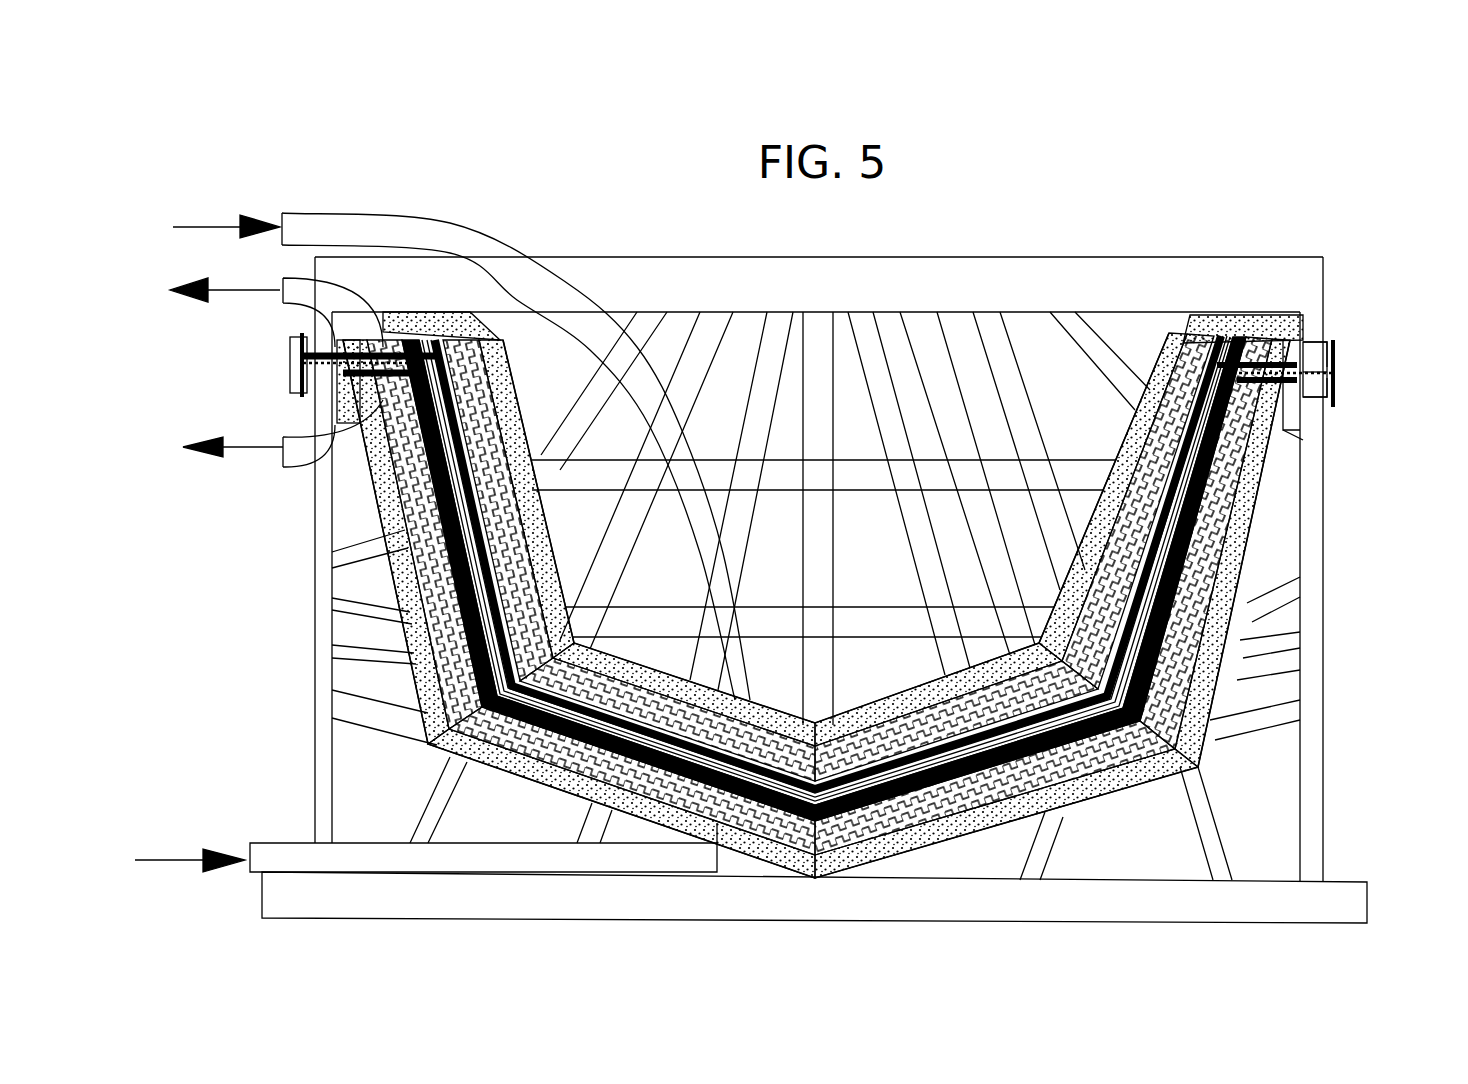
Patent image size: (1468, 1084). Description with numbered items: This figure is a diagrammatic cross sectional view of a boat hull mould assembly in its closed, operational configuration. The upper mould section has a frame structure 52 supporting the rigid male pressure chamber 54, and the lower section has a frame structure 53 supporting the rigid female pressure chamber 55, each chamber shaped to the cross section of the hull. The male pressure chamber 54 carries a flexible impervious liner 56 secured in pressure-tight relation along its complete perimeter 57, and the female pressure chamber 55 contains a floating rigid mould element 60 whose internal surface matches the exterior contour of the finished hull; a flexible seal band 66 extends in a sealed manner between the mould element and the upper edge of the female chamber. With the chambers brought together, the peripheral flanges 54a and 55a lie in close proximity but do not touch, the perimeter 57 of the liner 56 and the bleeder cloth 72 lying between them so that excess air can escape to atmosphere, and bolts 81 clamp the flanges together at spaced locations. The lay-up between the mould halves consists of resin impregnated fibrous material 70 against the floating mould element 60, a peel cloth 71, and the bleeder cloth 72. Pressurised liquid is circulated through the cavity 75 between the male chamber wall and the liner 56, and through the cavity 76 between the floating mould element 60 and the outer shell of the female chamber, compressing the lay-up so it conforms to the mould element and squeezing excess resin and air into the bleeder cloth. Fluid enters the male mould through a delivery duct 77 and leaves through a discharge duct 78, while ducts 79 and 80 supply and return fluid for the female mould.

The frame structure 52 is at (1017, 272).
The frame structure 53 is at (1305, 748).
The male pressure chamber 54 is at (1105, 548).
The peripheral flange 54a is at (1348, 337).
The female pressure chamber 55 is at (1215, 677).
The peripheral flange 55a is at (1350, 397).
The flexible impervious liner 56 is at (1100, 635).
The perimeter of the liner 57 is at (1298, 340).
The floating rigid mould element 60 is at (447, 715).
The flexible seal band 66 is at (1300, 430).
The resin impregnated fibrous material 70 is at (472, 697).
The peel cloth 71 is at (480, 663).
The bleeder cloth 72 is at (298, 352).
The cavity 75 is at (505, 580).
The cavity 76 is at (430, 612).
The delivery duct 77 is at (568, 300).
The discharge duct 78 is at (285, 272).
The duct 79 is at (285, 843).
The duct 80 is at (298, 470).
The bolts 81 is at (272, 400).